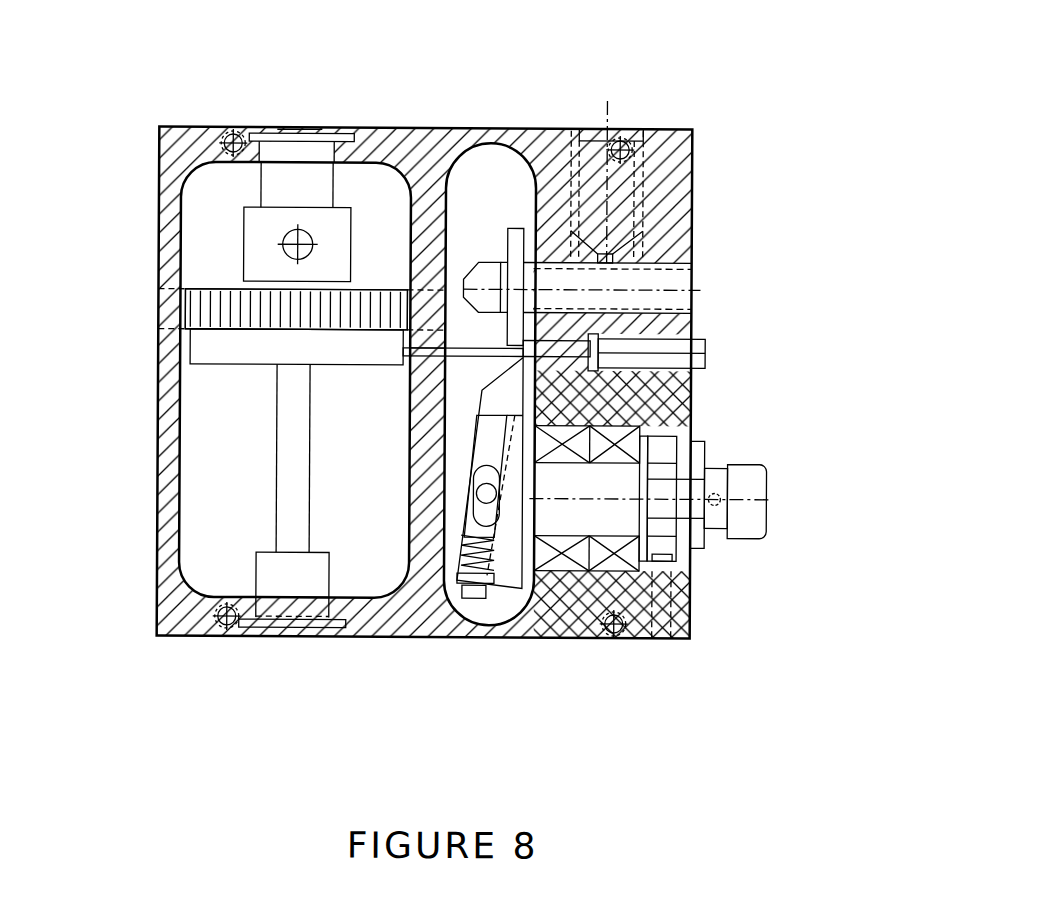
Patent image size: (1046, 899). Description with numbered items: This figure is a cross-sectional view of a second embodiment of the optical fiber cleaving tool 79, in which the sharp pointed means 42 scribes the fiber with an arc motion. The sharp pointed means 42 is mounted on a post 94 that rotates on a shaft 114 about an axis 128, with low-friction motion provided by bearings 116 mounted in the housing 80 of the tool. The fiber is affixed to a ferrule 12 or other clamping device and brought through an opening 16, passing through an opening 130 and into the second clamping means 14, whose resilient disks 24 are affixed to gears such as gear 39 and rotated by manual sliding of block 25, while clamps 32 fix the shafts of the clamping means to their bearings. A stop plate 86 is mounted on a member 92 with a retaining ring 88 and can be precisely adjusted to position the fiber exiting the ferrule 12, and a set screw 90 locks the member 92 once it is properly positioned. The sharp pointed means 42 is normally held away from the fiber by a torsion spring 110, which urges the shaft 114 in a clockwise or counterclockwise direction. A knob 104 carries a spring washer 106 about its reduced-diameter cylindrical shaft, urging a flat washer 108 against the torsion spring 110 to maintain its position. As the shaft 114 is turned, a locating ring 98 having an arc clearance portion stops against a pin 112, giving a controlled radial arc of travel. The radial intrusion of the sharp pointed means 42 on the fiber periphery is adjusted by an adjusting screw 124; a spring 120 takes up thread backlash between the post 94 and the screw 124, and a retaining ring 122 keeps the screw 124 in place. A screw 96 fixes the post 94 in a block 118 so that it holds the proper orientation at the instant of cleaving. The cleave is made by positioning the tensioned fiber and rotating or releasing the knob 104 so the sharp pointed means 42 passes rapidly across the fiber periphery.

The ferrule 12 is at (608, 343).
The second clamping means 14 is at (255, 377).
The opening 16 is at (697, 335).
The resilient disks 24 is at (192, 358).
The block 25 is at (222, 305).
The clamps 32 is at (268, 592).
The gear 39 is at (296, 309).
The sharp pointed means 42 is at (423, 405).
The cleaving tool 79 is at (378, 640).
The housing 80 is at (175, 142).
The stop plate 86 is at (518, 245).
The retaining ring 88 is at (531, 263).
The set screw 90 is at (628, 178).
The member 92 is at (683, 268).
The post 94 is at (495, 402).
The screw 96 is at (535, 476).
The locating ring 98 is at (668, 445).
The knob 104 is at (760, 513).
The spring washer 106 is at (717, 530).
The flat washer 108 is at (700, 560).
The torsion spring 110 is at (691, 587).
The pin 112 is at (672, 600).
The shaft 114 is at (600, 557).
The bearings 116 is at (577, 448).
The block 118 is at (518, 567).
The spring 120 is at (508, 586).
The retaining ring 122 is at (465, 588).
The adjusting screw 124 is at (462, 598).
The axis 128 is at (555, 505).
The opening 130 is at (515, 357).